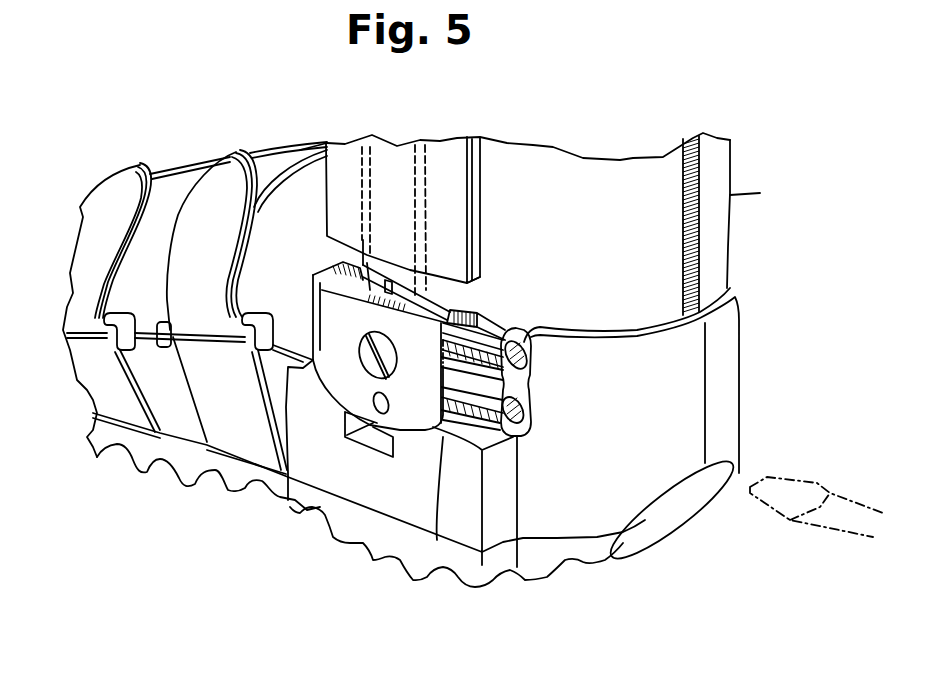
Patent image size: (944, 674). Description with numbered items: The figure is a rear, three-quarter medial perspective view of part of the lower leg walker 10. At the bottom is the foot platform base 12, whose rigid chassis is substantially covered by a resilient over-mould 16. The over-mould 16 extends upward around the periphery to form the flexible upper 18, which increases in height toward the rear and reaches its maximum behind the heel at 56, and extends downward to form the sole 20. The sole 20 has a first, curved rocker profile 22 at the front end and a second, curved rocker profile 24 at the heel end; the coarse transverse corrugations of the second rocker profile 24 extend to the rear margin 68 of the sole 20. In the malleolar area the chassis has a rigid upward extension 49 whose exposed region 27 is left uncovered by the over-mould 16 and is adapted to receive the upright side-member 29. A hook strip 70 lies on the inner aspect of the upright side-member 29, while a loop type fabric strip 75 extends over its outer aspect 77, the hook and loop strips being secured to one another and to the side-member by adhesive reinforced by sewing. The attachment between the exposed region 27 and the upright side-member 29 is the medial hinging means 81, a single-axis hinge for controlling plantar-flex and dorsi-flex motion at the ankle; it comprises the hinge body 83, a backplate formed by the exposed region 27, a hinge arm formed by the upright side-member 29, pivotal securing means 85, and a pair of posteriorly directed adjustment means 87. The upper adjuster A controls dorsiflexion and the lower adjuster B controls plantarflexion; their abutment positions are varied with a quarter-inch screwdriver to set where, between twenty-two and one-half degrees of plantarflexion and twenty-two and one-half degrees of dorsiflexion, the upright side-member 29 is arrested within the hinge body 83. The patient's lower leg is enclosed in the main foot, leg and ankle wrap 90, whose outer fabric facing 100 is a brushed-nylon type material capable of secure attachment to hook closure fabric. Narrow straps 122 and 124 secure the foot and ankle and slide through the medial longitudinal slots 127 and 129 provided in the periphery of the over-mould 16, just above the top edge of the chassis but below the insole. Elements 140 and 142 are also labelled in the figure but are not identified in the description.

The lower leg walker 10 is at (752, 221).
The foot platform base 12 is at (139, 476).
The over-mould 16 is at (502, 545).
The flexible upper 18 is at (113, 298).
The sole 20 is at (178, 487).
The first rocker profile 22 is at (97, 457).
The second rocker profile 24 is at (370, 563).
The exposed region of rigid upward extension 27 is at (437, 540).
The upright side-member 29 is at (423, 180).
The rigid upward extension 49 is at (443, 298).
The maximum height point behind heel 56 is at (728, 321).
The rear margin of sole 68 is at (690, 520).
The hook strip 70 is at (480, 177).
The loop type fabric strip 75 is at (450, 157).
The outer aspect of upright side-member 77 is at (380, 267).
The medial hinging means 81 is at (320, 268).
The hinge body 83 is at (378, 422).
The pivotal securing means 85 is at (375, 363).
The pair of posteriorly directed adjustment means 87 is at (527, 412).
The main foot, leg and ankle wrap 90 is at (730, 195).
The fabric facing 100 is at (620, 187).
The narrow strap 122 is at (266, 155).
The narrow strap 124 is at (162, 176).
The medial longitudinal slot 127 is at (226, 494).
The medial longitudinal slot 129 is at (93, 418).
The second fin 140 is at (237, 150).
The cut boundary 142 is at (123, 183).
The dorsiflexion adjuster A is at (523, 334).
The plantarflex adjuster B is at (513, 433).